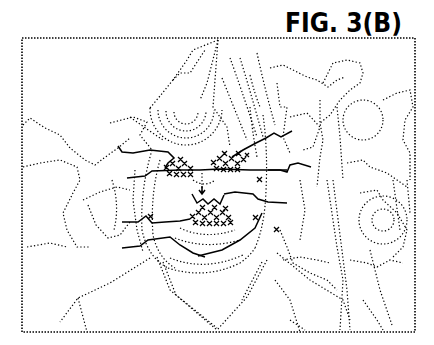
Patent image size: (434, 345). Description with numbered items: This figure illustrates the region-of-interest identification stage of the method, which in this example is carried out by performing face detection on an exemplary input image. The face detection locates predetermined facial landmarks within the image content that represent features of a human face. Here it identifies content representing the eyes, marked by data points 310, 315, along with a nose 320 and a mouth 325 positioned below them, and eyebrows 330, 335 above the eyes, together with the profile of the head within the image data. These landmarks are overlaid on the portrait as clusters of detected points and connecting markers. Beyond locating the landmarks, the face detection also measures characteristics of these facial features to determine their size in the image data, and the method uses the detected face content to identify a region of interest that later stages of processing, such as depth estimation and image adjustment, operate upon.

The eye data points 310 is at (193, 172).
The eye data points 315 is at (297, 195).
The nose 320 is at (254, 201).
The mouth 325 is at (164, 218).
The eyebrow 330 is at (178, 194).
The eyebrow 335 is at (264, 144).